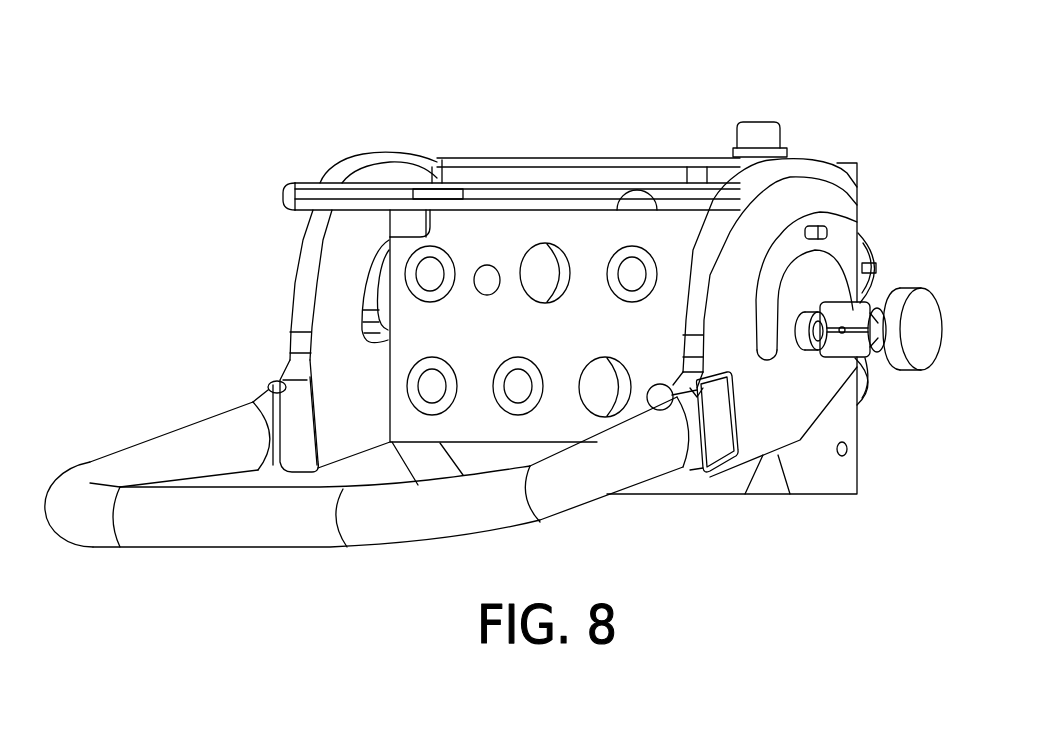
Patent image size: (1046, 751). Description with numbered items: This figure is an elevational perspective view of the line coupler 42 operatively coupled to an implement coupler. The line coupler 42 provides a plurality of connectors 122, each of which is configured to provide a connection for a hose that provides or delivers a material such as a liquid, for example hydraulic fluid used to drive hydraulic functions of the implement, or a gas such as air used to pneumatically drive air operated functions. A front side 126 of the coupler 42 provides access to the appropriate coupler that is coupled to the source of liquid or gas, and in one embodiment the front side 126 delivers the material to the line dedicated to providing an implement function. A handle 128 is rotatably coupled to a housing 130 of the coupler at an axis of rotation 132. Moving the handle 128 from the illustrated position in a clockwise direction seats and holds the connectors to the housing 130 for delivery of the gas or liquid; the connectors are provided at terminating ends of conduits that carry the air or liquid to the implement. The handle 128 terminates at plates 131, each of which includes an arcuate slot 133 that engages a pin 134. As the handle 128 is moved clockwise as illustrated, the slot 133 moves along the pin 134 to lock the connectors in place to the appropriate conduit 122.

The line coupler 42 is at (678, 88).
The connector 122 is at (406, 335).
The front side 126 is at (523, 230).
The handle 128 is at (187, 534).
The housing 130 is at (790, 443).
The plate 131 is at (297, 362).
The axis of rotation 132 is at (823, 323).
The arcuate slot 133 is at (386, 245).
The pin 134 is at (838, 233).